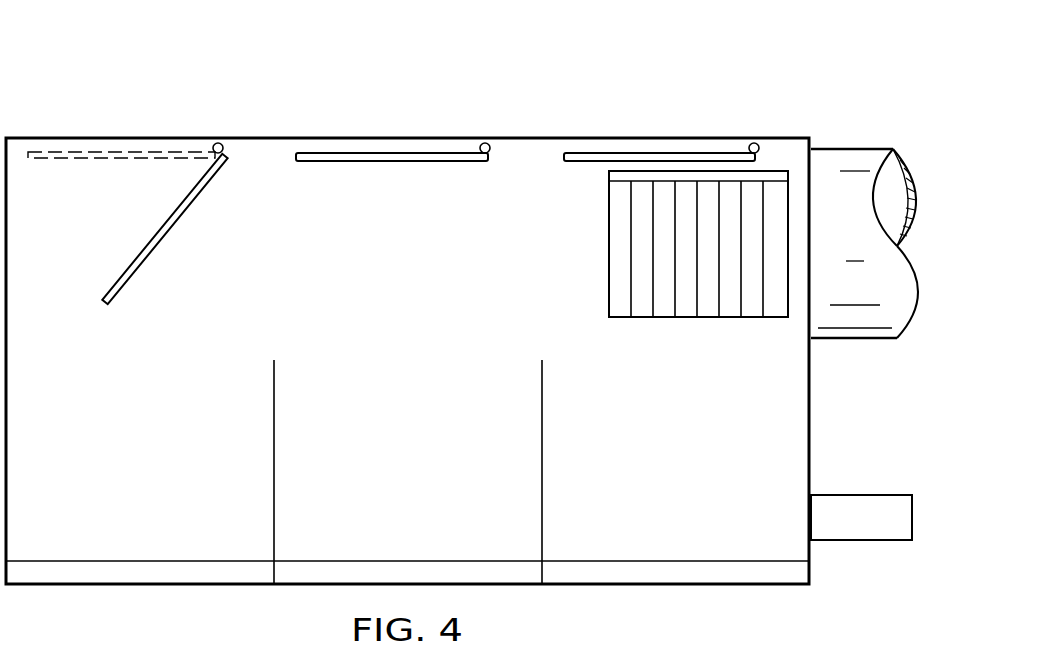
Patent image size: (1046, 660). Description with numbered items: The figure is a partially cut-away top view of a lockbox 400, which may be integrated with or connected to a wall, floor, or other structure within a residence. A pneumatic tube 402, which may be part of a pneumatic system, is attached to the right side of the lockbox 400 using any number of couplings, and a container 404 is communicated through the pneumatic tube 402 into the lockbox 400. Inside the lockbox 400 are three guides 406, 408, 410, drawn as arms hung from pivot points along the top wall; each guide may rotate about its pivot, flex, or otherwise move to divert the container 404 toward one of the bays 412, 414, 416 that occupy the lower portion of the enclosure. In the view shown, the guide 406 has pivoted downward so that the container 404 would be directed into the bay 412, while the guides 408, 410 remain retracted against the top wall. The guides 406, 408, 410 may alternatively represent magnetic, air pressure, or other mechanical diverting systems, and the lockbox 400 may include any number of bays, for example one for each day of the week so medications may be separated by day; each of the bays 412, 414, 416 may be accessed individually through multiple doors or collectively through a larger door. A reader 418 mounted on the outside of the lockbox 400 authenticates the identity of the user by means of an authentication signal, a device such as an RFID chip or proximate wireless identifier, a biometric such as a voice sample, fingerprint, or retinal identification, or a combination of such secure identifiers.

The lockbox 400 is at (150, 112).
The pneumatic tube 402 is at (855, 148).
The container 404 is at (710, 318).
The guide 406 is at (171, 228).
The guide 408 is at (391, 163).
The guide 410 is at (572, 163).
The bay 412 is at (162, 497).
The bay 414 is at (429, 497).
The bay 416 is at (698, 497).
The reader 418 is at (862, 541).